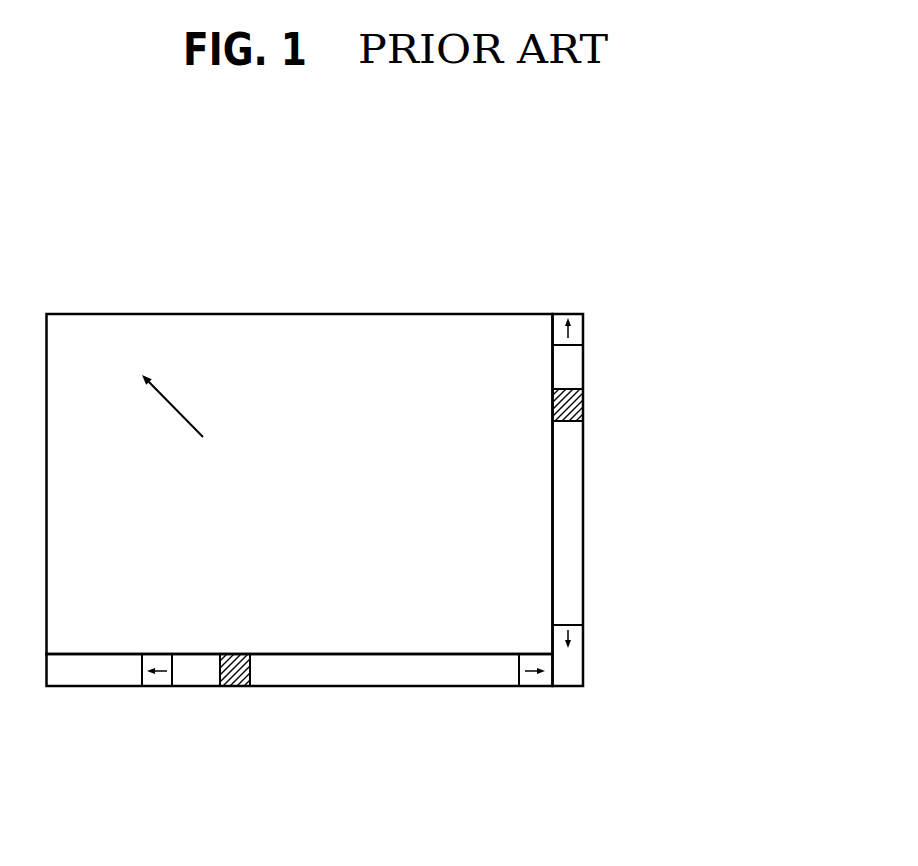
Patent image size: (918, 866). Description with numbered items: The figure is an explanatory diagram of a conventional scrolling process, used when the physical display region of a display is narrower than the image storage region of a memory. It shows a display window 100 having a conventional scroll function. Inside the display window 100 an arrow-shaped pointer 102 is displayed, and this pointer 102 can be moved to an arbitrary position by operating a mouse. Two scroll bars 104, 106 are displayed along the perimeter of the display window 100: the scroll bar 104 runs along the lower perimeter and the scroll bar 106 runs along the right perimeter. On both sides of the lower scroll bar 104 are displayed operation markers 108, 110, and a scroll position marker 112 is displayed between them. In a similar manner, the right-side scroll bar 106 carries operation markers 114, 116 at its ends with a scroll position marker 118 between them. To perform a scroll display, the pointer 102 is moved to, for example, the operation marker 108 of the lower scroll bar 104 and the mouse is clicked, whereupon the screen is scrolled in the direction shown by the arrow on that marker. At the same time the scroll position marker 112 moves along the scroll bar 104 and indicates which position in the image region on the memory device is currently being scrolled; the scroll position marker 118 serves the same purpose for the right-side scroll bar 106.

The display window 100 is at (293, 302).
The pointer 102 is at (170, 407).
The scroll bar 104 is at (383, 678).
The scroll bar 106 is at (570, 510).
The operation marker 108 is at (157, 680).
The operation marker 110 is at (535, 688).
The scroll position marker 112 is at (233, 686).
The operation marker 114 is at (577, 327).
The operation marker 116 is at (577, 638).
The scroll position marker 118 is at (577, 402).